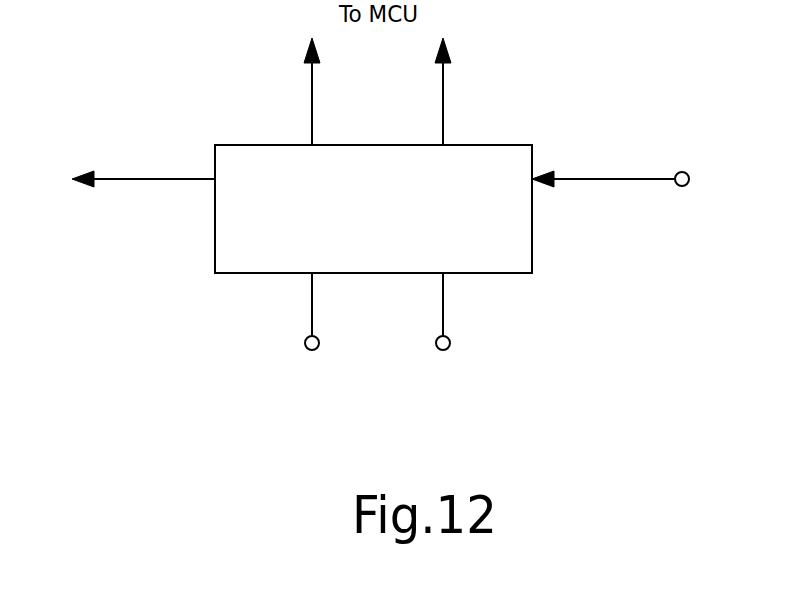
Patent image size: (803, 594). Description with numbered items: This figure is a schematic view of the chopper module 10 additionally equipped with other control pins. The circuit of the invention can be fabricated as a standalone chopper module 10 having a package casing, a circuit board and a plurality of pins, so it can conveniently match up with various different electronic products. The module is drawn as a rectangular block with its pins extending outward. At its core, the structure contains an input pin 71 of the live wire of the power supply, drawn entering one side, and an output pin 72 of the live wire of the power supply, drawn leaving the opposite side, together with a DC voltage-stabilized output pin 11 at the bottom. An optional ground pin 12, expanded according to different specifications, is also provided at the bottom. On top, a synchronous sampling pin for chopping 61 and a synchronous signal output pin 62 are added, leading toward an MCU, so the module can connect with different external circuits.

The chopper module 10 is at (245, 147).
The DC voltage-stabilized output pin 11 is at (308, 305).
The ground pin 12 is at (445, 305).
The synchronous sampling pin for chopping 61 is at (312, 107).
The synchronous signal output pin 62 is at (443, 107).
The input pin of live wire of power supply 71 is at (598, 180).
The output pin of live wire of power supply 72 is at (165, 180).